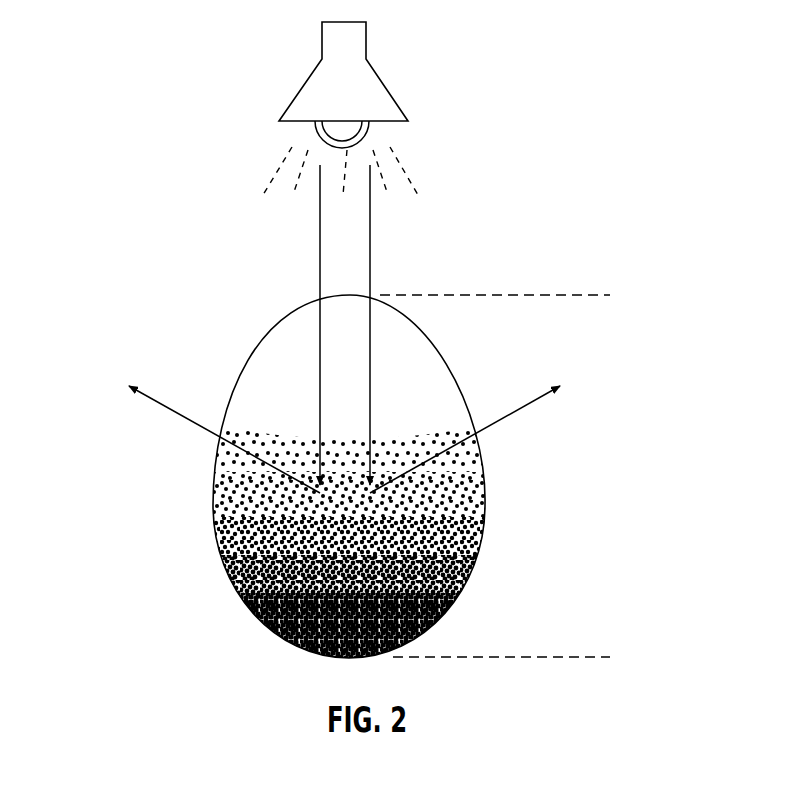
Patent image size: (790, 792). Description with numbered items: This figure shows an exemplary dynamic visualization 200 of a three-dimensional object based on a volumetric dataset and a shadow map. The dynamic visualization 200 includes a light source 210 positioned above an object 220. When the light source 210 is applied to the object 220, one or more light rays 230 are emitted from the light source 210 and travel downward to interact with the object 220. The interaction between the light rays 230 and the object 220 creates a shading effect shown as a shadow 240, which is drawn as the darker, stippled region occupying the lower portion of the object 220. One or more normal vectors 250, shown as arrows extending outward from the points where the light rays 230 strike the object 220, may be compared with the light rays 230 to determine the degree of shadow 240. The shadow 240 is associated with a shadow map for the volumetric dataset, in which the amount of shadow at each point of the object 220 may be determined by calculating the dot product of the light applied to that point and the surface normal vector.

The dynamic visualization 200 is at (133, 112).
The light source 210 is at (365, 40).
The object 220 is at (610, 295).
The light rays 230 is at (320, 276).
The shadow 240 is at (430, 605).
The normal vectors 250 is at (170, 408).